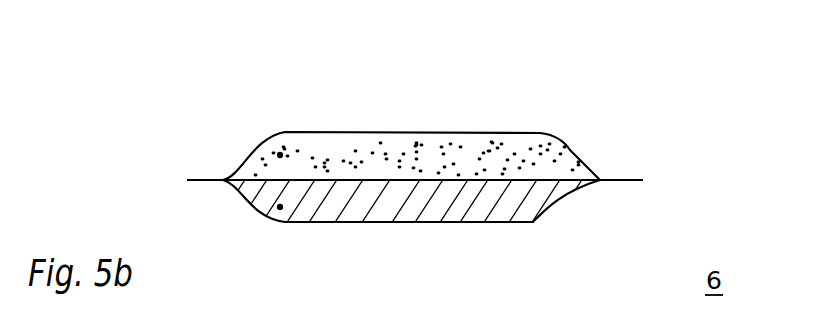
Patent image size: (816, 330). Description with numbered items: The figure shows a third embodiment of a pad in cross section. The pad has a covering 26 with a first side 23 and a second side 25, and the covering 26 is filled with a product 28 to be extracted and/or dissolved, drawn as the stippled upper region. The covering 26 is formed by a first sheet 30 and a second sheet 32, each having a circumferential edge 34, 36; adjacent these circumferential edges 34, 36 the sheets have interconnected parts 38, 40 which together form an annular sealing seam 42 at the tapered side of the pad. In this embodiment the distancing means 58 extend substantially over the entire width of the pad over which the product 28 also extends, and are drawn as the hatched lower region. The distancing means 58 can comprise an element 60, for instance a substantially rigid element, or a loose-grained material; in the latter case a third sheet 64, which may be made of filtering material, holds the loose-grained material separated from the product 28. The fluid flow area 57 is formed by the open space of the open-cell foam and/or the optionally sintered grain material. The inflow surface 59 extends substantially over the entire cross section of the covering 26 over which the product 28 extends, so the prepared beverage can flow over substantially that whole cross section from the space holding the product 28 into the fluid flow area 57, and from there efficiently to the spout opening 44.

The first side 23 is at (303, 132).
The second side 25 is at (305, 229).
The covering 26 is at (473, 131).
The product 28 is at (280, 155).
The first sheet 30 is at (513, 131).
The second sheet 32 is at (500, 228).
The circumferential edge 34 is at (625, 228).
The circumferential edge 36 is at (638, 233).
The interconnected part 38 is at (633, 214).
The interconnected part 40 is at (645, 211).
The annular sealing seam 42 is at (635, 185).
The spout opening 44 is at (422, 223).
The fluid flow area 57 is at (457, 200).
The distancing means 58 is at (280, 207).
The inflow surface 59 is at (386, 180).
The element 60 is at (368, 210).
The third sheet 64 is at (518, 180).